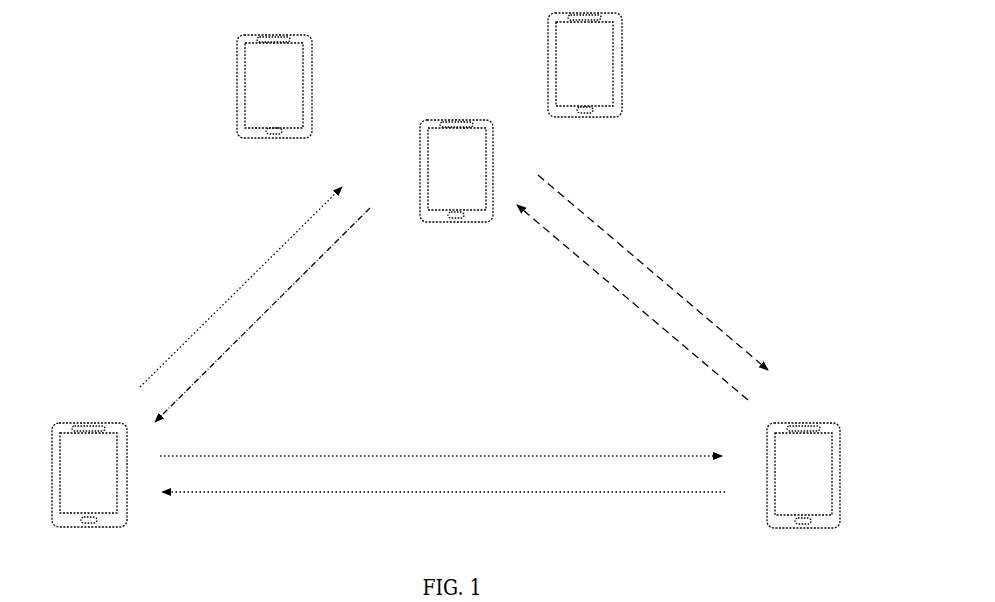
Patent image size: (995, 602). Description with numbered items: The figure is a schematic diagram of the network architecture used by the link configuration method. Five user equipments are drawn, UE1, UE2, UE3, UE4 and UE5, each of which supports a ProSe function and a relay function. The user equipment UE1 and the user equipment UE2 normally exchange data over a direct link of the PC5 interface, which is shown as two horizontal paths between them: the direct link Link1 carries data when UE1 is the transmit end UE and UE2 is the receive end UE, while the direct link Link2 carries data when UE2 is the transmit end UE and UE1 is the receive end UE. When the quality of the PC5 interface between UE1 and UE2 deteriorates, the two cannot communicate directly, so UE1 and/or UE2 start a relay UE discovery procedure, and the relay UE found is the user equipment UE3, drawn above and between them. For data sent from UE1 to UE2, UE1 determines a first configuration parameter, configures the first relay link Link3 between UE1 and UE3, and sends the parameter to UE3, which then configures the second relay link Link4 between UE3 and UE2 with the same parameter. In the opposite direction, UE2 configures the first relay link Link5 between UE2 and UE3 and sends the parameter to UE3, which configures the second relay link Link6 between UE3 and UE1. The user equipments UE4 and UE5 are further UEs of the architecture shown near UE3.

The user equipment UE1 is at (89, 487).
The user equipment UE2 is at (803, 487).
The relay UE UE3 is at (456, 184).
The user equipment UE4 is at (274, 101).
The user equipment UE5 is at (585, 79).
The direct link Link1 is at (441, 457).
The direct link Link2 is at (443, 492).
The first relay link Link3 is at (241, 287).
The second relay link Link6 is at (262, 315).
The second relay link Link4 is at (653, 272).
The first relay link Link5 is at (632, 302).